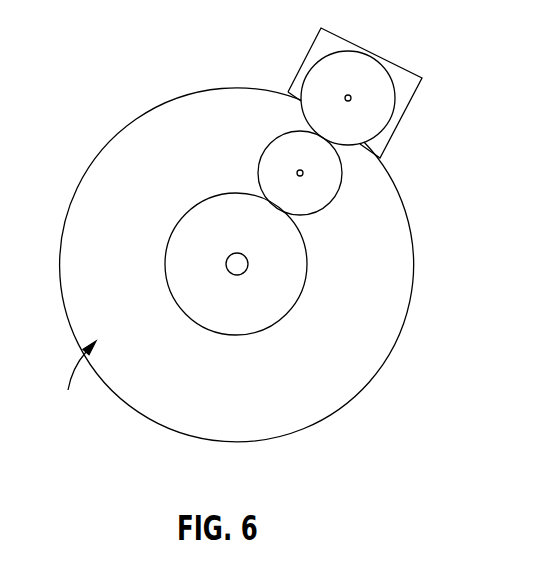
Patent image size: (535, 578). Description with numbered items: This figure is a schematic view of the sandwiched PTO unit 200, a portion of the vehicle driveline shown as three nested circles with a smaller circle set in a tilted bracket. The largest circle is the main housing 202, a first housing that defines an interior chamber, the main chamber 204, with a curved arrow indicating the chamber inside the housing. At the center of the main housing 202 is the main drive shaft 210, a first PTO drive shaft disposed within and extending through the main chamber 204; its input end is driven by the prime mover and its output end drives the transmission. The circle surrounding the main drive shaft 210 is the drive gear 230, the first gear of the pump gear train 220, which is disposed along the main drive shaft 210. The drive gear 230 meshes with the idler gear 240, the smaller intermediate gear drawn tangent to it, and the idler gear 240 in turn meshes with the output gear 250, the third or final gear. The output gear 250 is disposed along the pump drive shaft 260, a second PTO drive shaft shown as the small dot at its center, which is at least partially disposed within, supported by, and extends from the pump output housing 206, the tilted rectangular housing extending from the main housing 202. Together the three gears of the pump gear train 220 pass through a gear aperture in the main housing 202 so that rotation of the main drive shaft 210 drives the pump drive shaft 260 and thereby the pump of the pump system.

The sandwiched PTO unit 200 is at (303, 440).
The main housing 202 is at (110, 137).
The main chamber 204 is at (71, 383).
The pump output housing 206 is at (416, 72).
The main drive shaft 210 is at (237, 276).
The pump gear train 220 is at (282, 330).
The drive gear 230 is at (197, 207).
The idler gear 240 is at (283, 132).
The output gear 250 is at (312, 56).
The pump drive shaft 260 is at (350, 102).